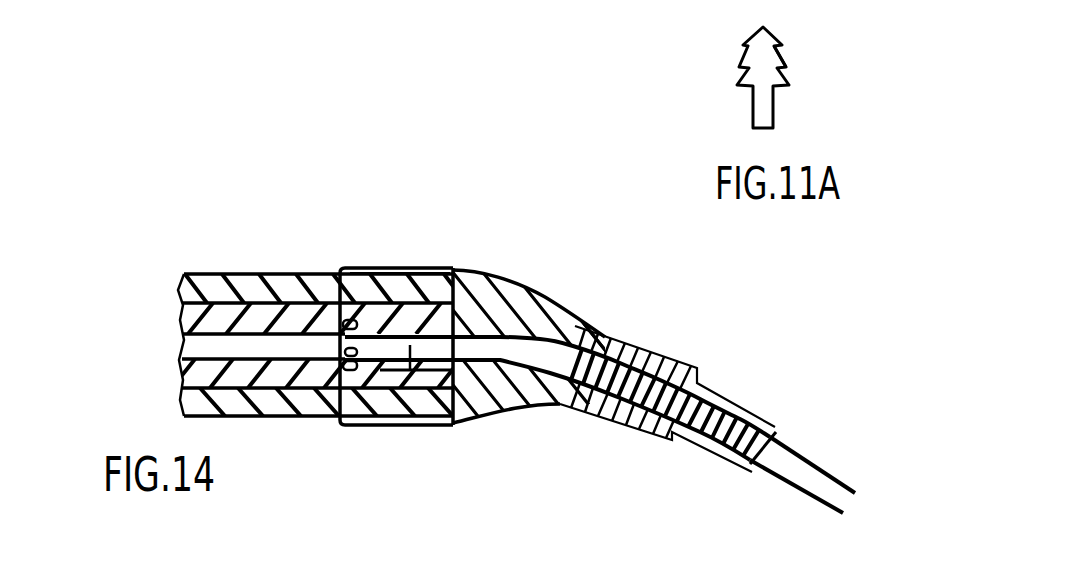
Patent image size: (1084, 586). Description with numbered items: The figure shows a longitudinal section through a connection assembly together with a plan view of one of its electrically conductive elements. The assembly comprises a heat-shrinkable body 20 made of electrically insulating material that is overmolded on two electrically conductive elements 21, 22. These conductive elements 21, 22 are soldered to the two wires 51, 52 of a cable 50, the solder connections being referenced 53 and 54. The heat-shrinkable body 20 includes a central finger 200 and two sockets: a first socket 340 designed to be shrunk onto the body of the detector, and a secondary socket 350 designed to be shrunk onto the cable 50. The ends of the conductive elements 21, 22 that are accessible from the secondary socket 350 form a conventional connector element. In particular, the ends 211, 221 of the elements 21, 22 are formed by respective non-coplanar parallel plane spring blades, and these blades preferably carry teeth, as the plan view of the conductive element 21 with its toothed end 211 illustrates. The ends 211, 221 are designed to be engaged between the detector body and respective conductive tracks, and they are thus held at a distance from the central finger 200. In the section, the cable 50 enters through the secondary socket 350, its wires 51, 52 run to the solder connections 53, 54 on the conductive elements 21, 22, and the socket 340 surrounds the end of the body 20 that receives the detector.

In FIG. 11A, the electrically conductive element 21 is at (797, 88).
In FIG. 14, the electrically conductive element 21 is at (474, 335).
In FIG. 11A, the end of electrically conductive element 211 is at (783, 34).
In FIG. 14, the end of electrically conductive element 211 is at (407, 283).
In FIG. 14, the socket 340 is at (378, 276).
In FIG. 14, the central finger 200 is at (368, 395).
In FIG. 14, the end of electrically conductive element 221 is at (411, 395).
In FIG. 14, the electrically conductive element 22 is at (455, 395).
In FIG. 14, the heat-shrinkable body 20 is at (483, 408).
In FIG. 14, the solder connection 54 is at (530, 417).
In FIG. 14, the solder connection 53 is at (512, 332).
In FIG. 14, the secondary socket 350 is at (665, 357).
In FIG. 14, the cable 50 is at (742, 398).
In FIG. 14, the wire 51 is at (822, 465).
In FIG. 14, the wire 52 is at (785, 470).